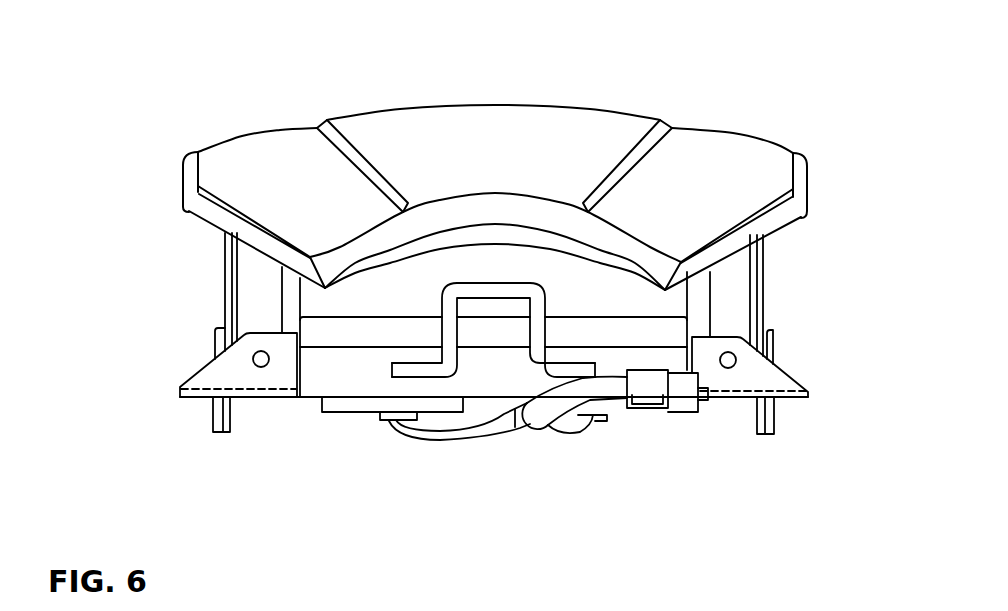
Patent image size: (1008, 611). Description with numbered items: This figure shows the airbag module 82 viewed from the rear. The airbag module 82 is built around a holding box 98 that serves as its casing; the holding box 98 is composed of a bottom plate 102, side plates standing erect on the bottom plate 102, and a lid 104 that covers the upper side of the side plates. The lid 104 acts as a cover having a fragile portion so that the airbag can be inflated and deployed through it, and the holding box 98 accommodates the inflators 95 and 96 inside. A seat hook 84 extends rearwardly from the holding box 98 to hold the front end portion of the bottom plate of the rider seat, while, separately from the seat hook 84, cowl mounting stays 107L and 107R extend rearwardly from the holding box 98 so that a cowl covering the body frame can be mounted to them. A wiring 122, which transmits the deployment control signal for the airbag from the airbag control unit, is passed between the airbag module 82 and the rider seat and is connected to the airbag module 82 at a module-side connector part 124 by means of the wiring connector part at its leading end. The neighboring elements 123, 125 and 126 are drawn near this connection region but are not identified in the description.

The airbag module 82 is at (616, 90).
The lid 104 is at (482, 108).
The holding box 98 is at (738, 283).
The cowl mounting stay 107L is at (237, 360).
The cowl mounting stay 107R is at (752, 365).
The seat hook 84 is at (460, 333).
The inflator 95 is at (343, 407).
The bottom plate 102 is at (390, 423).
The wiring 122 is at (577, 405).
The inflator 96 is at (607, 420).
The connector housing 123 is at (618, 408).
The connector part 124 is at (683, 405).
The clip 126 is at (650, 410).
The connector terminal 125 is at (707, 397).